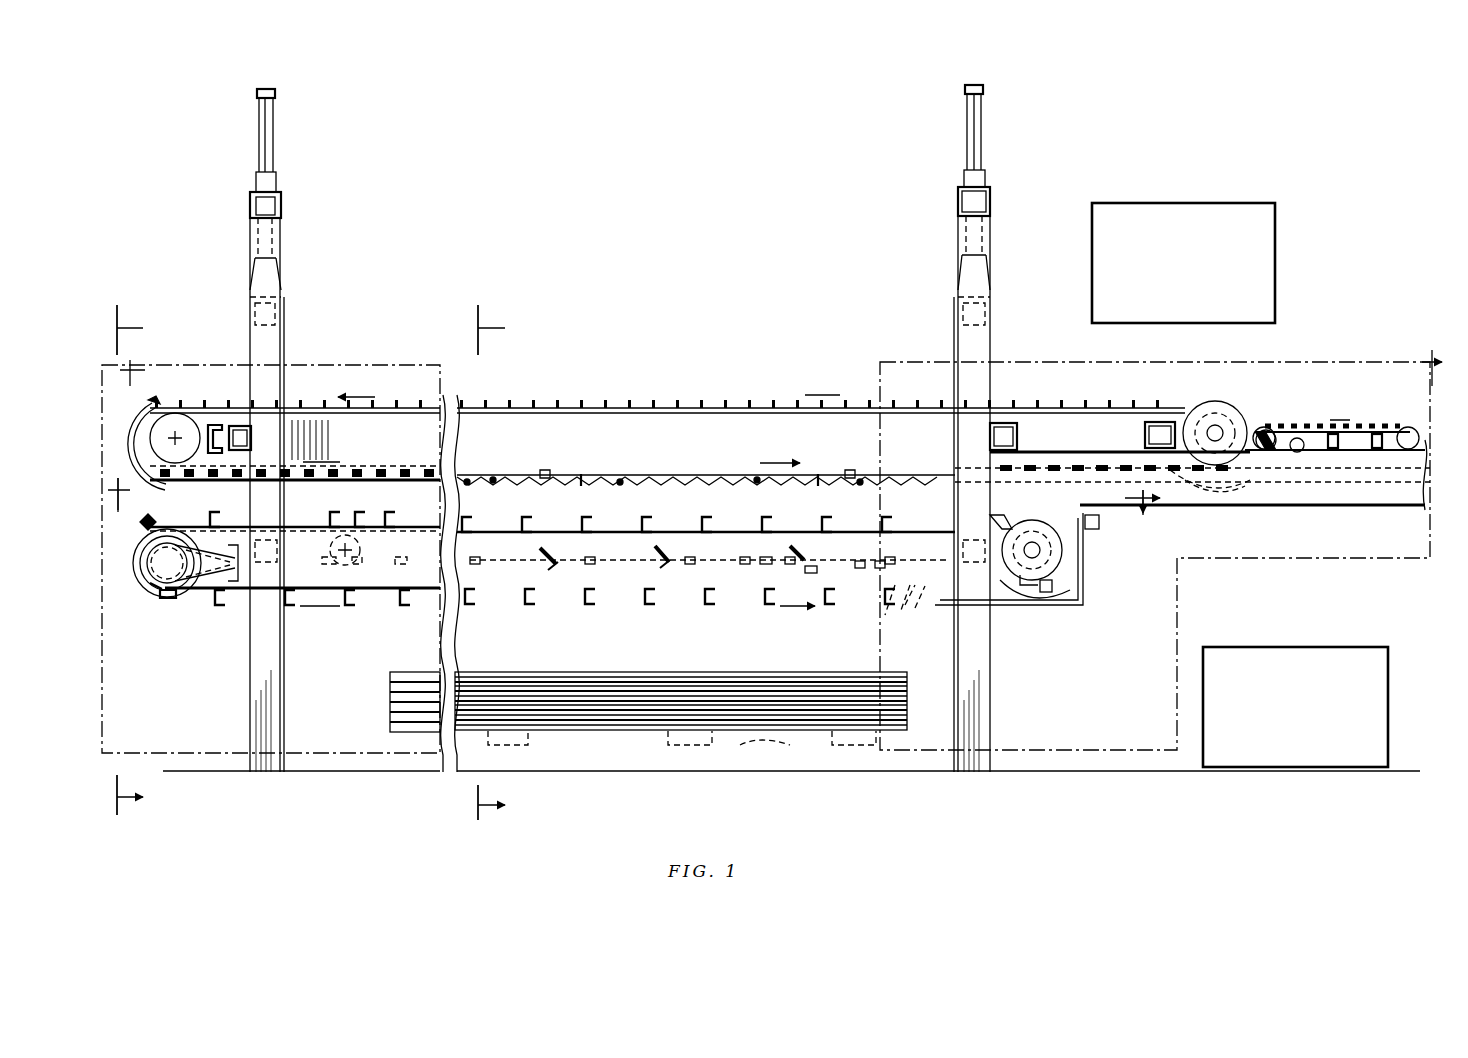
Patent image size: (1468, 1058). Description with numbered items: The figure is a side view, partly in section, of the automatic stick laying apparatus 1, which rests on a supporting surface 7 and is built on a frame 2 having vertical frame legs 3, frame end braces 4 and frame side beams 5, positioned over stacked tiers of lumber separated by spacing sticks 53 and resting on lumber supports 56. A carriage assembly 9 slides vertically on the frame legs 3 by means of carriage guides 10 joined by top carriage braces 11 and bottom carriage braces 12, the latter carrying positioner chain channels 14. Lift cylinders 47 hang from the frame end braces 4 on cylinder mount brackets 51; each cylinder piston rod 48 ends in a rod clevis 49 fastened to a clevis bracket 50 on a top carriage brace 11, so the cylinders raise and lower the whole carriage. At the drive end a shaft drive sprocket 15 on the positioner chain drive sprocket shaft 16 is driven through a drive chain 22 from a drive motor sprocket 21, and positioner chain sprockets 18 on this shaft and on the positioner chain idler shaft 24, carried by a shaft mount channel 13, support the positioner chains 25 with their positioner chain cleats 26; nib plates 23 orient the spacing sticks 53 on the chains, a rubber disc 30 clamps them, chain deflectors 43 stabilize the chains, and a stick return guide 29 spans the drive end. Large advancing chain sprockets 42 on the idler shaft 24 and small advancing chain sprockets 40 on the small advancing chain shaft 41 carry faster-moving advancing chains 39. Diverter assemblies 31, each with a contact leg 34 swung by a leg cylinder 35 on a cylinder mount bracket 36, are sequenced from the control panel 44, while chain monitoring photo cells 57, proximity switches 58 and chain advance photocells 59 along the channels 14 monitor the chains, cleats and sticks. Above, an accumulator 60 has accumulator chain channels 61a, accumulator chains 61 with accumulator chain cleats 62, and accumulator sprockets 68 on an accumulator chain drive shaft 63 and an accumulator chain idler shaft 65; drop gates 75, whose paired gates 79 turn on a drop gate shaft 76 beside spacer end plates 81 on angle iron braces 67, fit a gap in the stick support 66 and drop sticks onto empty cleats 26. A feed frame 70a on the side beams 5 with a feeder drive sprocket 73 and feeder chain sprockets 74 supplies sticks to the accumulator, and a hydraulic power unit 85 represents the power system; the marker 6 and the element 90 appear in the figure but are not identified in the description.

The automatic stick laying apparatus 1 is at (1284, 146).
The frame 2 is at (245, 205).
The vertical frame legs 3 is at (246, 360).
The frame end braces 4 is at (282, 216).
The frame side beams 5 is at (1314, 362).
The section line 6 is at (120, 560).
The supporting surface 7 is at (1102, 750).
The carriage assembly 9 is at (288, 348).
The carriage guides 10 is at (284, 310).
The top carriage braces 11 is at (254, 312).
The bottom carriage braces 12 is at (278, 554).
The shaft mount channel 13 is at (175, 496).
The positioner chain channels 14 is at (710, 551).
The shaft drive sprocket 15 is at (1082, 566).
The positioner chain drive sprocket shaft 16 is at (1032, 526).
The positioner chain sprockets 18 is at (144, 586).
The drive motor sprocket 21 is at (882, 572).
The drive chain 22 is at (1016, 596).
The nib plates 23 is at (533, 526).
The positioner chain idler shaft 24 is at (144, 560).
The positioner chains 25 is at (492, 536).
The positioner chain cleats 26 is at (224, 512).
The stick return guide 29 is at (1086, 580).
The rubber disc 30 is at (154, 598).
The diverter assemblies 31 is at (394, 517).
The contact leg 34 is at (410, 594).
The leg cylinder 35 is at (516, 564).
The cylinder mount bracket 36 is at (773, 560).
The advancing chains 39 is at (210, 528).
The small advancing chain sprockets 40 is at (362, 550).
The small advancing chain shaft 41 is at (342, 520).
The large advancing chain sprockets 42 is at (152, 508).
The chain deflectors 43 is at (192, 563).
The control panel 44 is at (1278, 262).
The lift cylinders 47 is at (278, 150).
The cylinder piston rods 48 is at (254, 226).
The rod clevis 49 is at (282, 272).
The clevis bracket 50 is at (250, 294).
The cylinder mount brackets 51 is at (282, 179).
The spacing sticks 53 is at (1341, 390).
The lumber supports 56 is at (726, 670).
The chain monitoring photo cells 57 is at (474, 594).
The proximity switches 58 is at (332, 558).
The chain advance photocells 59 is at (904, 600).
The accumulator 60 is at (706, 392).
The accumulator chains 61 is at (292, 408).
The accumulator chain channels 61a is at (861, 451).
The accumulator chain cleats 62 is at (602, 402).
The accumulator chain drive shaft 63 is at (1216, 412).
The accumulator chain idler shaft 65 is at (170, 414).
The stick support 66 is at (144, 440).
The angle iron braces 67 is at (598, 484).
The accumulator sprockets 68 is at (208, 422).
The feed frame 70a is at (1336, 458).
The feeder drive sprocket 73 is at (1271, 462).
The feeder chain sprockets 74 is at (1407, 452).
The drop gates 75 is at (494, 474).
The drop gate shaft 76 is at (582, 470).
The gates 79 is at (469, 476).
The spacer end plates 81 is at (544, 468).
The hydraulic power unit 85 is at (1310, 646).
The discharge conveyor 90 is at (1411, 418).